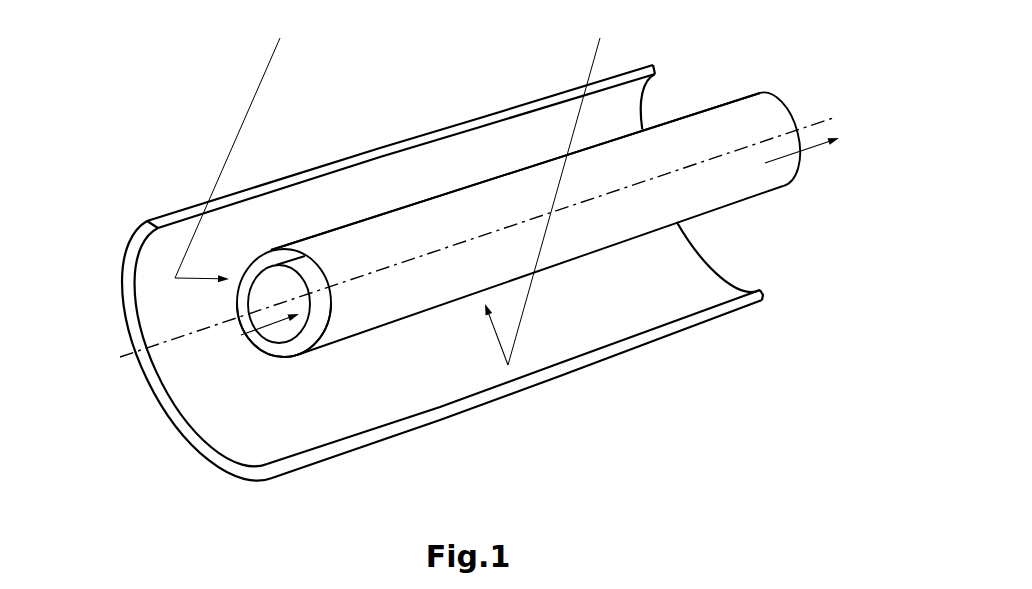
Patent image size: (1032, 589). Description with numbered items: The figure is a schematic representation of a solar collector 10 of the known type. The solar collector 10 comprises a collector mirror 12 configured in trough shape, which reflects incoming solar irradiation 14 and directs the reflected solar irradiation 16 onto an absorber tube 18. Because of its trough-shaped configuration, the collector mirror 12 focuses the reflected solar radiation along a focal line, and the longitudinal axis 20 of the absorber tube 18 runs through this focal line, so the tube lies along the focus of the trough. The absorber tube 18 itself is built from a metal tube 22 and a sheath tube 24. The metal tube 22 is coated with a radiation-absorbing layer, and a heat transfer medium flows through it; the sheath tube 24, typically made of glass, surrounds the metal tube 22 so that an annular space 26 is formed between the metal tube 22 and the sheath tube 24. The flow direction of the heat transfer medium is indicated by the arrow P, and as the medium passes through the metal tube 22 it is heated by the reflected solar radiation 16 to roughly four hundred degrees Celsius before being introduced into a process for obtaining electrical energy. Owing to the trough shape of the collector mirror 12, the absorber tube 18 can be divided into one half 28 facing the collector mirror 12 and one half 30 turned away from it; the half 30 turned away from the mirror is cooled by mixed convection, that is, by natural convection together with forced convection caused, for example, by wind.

The solar collector 10 is at (190, 83).
The collector mirror 12 is at (228, 458).
The solar irradiation 14 is at (252, 112).
The reflected solar irradiation 16 is at (201, 288).
The absorber tube 18 is at (732, 76).
The longitudinal axis 20 is at (132, 357).
The metal tube 22 is at (281, 346).
The sheath tube 24 is at (273, 252).
The annular space 26 is at (296, 352).
The half facing collector mirror 28 is at (241, 366).
The half turned away from collector mirror 30 is at (341, 252).
The arrow indicating flow direction P is at (523, 253).